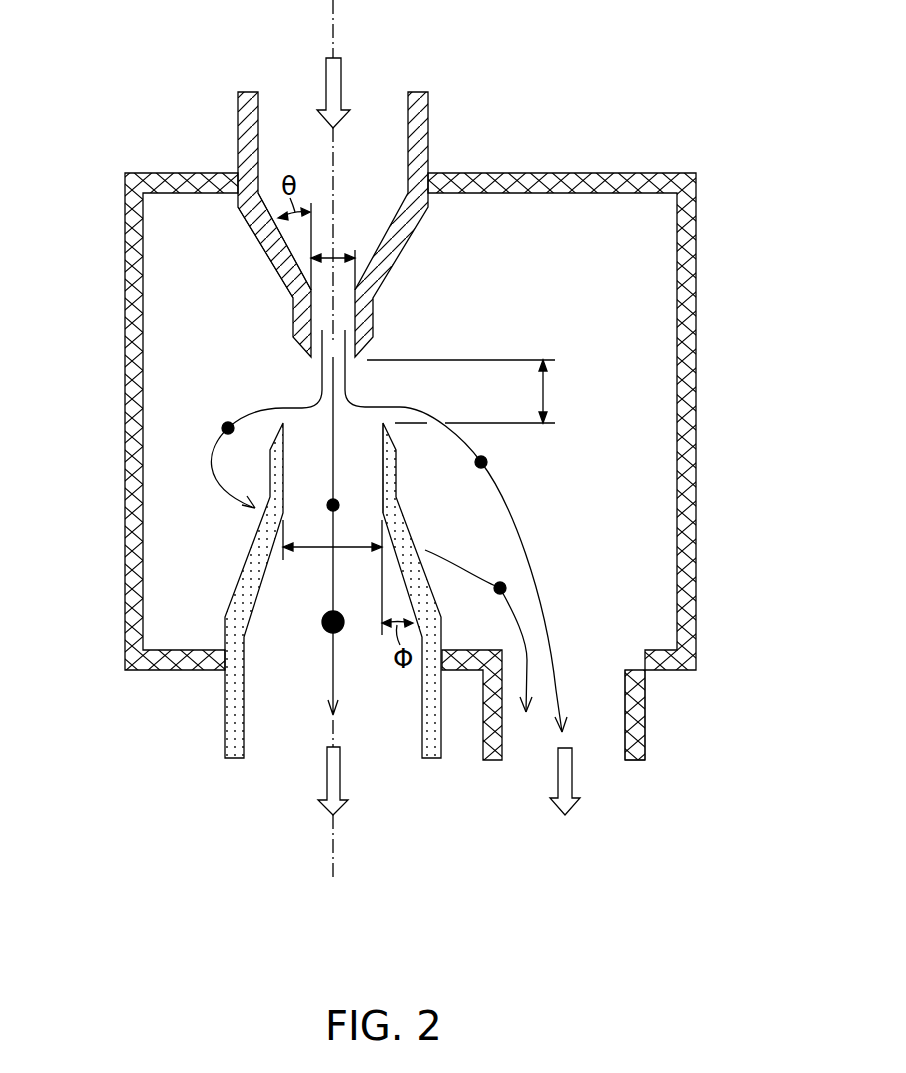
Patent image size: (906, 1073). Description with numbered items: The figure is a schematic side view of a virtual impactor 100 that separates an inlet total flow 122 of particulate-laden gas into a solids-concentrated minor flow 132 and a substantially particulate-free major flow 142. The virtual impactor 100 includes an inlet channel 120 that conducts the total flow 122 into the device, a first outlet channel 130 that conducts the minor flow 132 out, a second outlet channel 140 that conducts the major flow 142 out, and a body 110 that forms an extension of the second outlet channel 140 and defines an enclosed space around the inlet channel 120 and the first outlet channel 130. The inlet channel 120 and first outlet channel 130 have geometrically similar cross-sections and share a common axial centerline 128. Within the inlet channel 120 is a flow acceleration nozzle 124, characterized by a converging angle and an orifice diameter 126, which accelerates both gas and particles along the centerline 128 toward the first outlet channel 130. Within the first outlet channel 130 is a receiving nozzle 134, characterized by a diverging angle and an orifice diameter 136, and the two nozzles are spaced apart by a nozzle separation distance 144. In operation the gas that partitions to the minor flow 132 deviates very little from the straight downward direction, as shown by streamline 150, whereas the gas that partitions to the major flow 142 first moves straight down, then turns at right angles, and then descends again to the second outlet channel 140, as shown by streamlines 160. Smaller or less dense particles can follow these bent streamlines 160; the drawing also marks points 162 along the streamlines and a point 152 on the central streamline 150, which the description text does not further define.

The virtual impactor 100 is at (178, 116).
The body 110 is at (580, 173).
The inlet channel 120 is at (427, 112).
The total flow 122 is at (327, 72).
The flow acceleration nozzle 124 is at (302, 317).
The orifice diameter 126 is at (337, 257).
The axial centerline 128 is at (333, 872).
The first outlet channel 130 is at (228, 718).
The minor flow 132 is at (327, 790).
The receiving nozzle 134 is at (395, 437).
The orifice diameter 136 is at (310, 548).
The second outlet channel 140 is at (645, 712).
The major flow 142 is at (573, 780).
The nozzle separation distance 144 is at (545, 380).
The streamline 150 is at (333, 688).
The stagnation point 152 is at (340, 628).
The streamlines 160 is at (283, 408).
The streamline points 162 is at (228, 428).